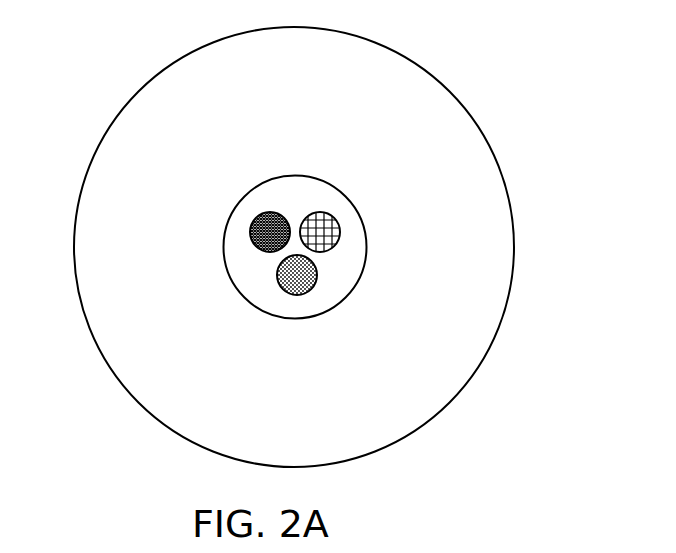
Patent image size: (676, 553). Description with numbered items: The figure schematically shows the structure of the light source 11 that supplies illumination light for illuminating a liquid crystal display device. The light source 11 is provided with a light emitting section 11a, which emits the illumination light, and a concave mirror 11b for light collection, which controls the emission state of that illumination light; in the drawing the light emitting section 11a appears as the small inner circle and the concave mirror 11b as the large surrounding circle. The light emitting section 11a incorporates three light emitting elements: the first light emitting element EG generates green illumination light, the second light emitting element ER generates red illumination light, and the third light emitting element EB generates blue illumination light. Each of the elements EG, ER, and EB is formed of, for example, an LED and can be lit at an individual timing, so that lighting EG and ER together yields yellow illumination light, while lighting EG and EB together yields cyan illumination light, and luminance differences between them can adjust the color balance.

The light source 11 is at (520, 70).
The light emitting section 11a is at (266, 177).
The concave mirror 11b is at (487, 272).
The third light emitting element EB is at (258, 215).
The second light emitting element ER is at (333, 217).
The first light emitting element EG is at (297, 296).